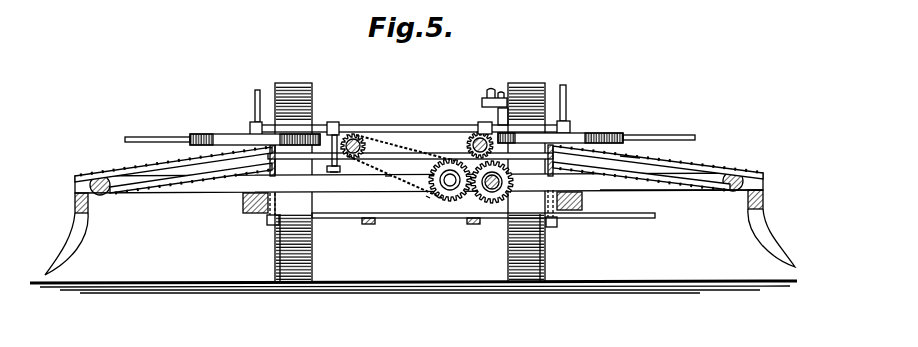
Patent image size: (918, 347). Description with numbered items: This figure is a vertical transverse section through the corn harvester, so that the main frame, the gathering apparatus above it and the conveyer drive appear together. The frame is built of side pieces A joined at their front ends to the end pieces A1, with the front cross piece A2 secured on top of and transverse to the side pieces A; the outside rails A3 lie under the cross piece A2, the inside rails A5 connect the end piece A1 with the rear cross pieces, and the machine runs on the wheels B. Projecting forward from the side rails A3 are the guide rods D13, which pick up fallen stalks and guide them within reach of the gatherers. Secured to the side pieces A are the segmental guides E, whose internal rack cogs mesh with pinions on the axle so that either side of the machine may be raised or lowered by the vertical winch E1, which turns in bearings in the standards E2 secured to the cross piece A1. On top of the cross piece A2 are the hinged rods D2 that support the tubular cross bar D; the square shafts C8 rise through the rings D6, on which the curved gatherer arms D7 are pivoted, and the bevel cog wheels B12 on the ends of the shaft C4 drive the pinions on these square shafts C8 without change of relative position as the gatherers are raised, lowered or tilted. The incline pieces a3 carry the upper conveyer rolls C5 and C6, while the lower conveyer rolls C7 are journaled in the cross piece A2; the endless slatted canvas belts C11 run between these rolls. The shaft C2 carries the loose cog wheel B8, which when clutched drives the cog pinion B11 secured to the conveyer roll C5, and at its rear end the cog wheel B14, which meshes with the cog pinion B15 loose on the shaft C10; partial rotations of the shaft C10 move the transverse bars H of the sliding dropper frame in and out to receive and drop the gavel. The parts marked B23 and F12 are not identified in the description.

The side pieces A is at (247, 205).
The end piece A1 is at (330, 215).
The front cross piece A2 is at (678, 192).
The outside rails A3 is at (68, 194).
The inside rails A5 is at (418, 231).
The wheel B is at (312, 262).
The cog wheel B8 is at (428, 197).
The cog pinion B11 is at (467, 140).
The bevel cog wheel B12 is at (238, 165).
The cog wheel B14 is at (446, 201).
The cog pinion B15 is at (476, 204).
The brace bar B23 is at (643, 152).
The shaft C2 is at (468, 148).
The shaft C4 is at (412, 148).
The upper conveyer roll C5 is at (477, 138).
The upper conveyer roll C6 is at (339, 182).
The lower conveyer rolls C7 is at (96, 176).
The square shaft C8 is at (255, 110).
The shaft C10 is at (503, 182).
The endless canvas belts C11 is at (165, 196).
The tubular cross bar D is at (374, 125).
The rods D2 is at (333, 122).
The rings D6 is at (213, 134).
The curved arm D7 is at (164, 137).
The guide rods D13 is at (73, 241).
The segmental guides E is at (270, 229).
The winch E1 is at (552, 230).
The standards E2 is at (484, 104).
The lever F12 is at (390, 178).
The transverse bars H is at (641, 218).
The incline pieces a3 is at (156, 166).